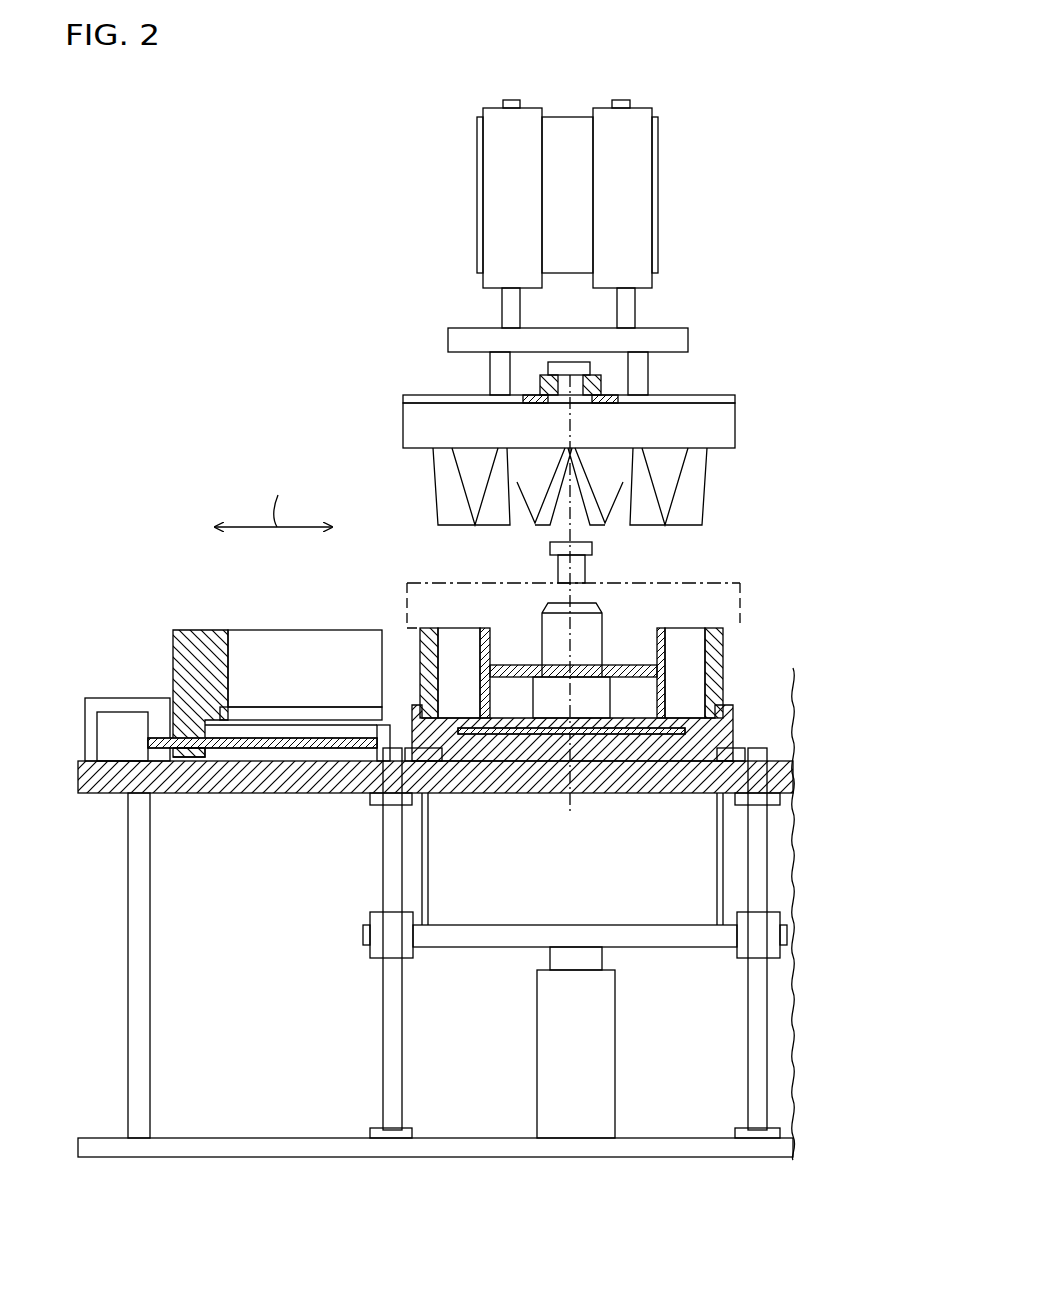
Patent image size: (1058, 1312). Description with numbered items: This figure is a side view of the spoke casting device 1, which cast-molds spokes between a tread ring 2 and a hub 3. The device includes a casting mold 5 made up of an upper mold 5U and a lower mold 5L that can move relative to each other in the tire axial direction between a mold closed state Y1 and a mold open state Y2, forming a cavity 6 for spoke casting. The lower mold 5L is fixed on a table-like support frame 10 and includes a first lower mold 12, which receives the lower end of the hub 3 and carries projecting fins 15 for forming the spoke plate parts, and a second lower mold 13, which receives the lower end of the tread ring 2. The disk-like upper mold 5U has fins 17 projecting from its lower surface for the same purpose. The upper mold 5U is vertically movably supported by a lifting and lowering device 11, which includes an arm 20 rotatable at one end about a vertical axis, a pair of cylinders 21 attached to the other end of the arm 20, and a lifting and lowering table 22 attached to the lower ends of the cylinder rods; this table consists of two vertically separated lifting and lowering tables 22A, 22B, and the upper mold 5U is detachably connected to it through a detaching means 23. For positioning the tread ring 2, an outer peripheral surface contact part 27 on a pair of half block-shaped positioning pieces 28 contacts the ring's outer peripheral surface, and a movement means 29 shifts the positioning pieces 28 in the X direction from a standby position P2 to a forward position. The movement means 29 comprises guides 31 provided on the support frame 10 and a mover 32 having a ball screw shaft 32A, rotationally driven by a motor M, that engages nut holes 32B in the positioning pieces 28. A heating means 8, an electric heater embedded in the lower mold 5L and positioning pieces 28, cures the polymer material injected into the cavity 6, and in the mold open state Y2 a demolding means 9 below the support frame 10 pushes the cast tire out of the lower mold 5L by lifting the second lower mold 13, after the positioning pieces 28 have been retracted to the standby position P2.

The spoke casting device 1 is at (232, 415).
The tread ring 2 is at (430, 635).
The hub 3 is at (510, 663).
The casting mold 5 is at (828, 447).
The upper mold 5U is at (551, 526).
The lower mold 5L is at (777, 605).
The cavity 6 is at (452, 637).
The heating means 8 is at (532, 795).
The demolding means 9 is at (520, 1053).
The support frame 10 is at (200, 793).
The lifting and lowering device 11 is at (437, 168).
The first lower mold 12 is at (712, 650).
The second lower mold 13 is at (735, 727).
The fins 15 is at (688, 728).
The fins 17 is at (705, 473).
The arm 20 is at (573, 117).
The cylinders 21 is at (530, 108).
The lifting and lowering table 22 is at (328, 240).
The lifting and lowering table 22A is at (468, 337).
The lifting and lowering table 22B is at (432, 397).
The detaching means 23 is at (603, 377).
The outer peripheral surface contact part 27 is at (230, 668).
The positioning pieces 28 is at (173, 650).
The movement means 29 is at (143, 673).
The guides 31 is at (115, 697).
The mover 32 is at (330, 917).
The ball screw shaft 32A is at (287, 793).
The nut holes 32B is at (233, 793).
The motor M is at (80, 706).
The standby position P2 is at (190, 577).
The mold closed state Y1 is at (672, 578).
The mold open state Y2 is at (702, 373).